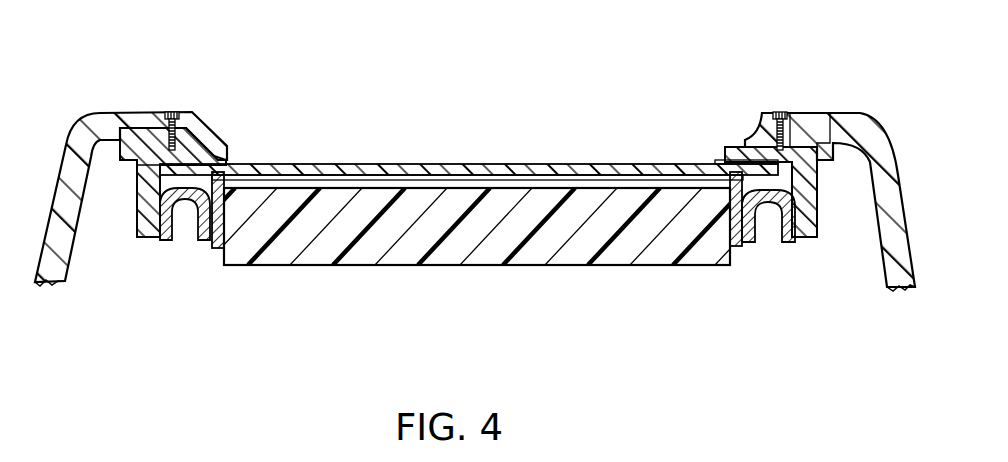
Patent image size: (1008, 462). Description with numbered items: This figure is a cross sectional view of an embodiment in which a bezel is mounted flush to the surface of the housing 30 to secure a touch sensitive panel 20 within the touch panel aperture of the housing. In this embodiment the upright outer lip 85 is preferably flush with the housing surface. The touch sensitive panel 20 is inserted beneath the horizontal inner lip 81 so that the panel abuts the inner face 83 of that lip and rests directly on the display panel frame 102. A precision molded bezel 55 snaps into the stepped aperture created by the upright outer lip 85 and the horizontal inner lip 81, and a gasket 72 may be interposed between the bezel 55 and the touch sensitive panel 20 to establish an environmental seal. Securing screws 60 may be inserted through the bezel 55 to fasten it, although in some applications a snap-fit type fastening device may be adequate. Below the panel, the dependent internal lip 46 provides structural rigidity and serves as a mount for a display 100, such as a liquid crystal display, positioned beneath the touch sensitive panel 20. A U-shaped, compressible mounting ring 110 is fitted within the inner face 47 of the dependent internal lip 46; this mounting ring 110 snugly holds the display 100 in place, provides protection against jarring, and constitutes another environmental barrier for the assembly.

The touch sensitive panel 20 is at (430, 164).
The housing 30 is at (898, 188).
The dependent internal lip 46 is at (137, 195).
The inner face 47 is at (150, 240).
The bezel 55 is at (210, 137).
The securing screws 60 is at (780, 115).
The gasket 72 is at (737, 162).
The horizontal inner lip 81 is at (190, 148).
The inner face 83 is at (767, 149).
The upright outer lip 85 is at (807, 115).
The display 100 is at (643, 258).
The display panel frame 102 is at (212, 250).
The mounting ring 110 is at (748, 245).